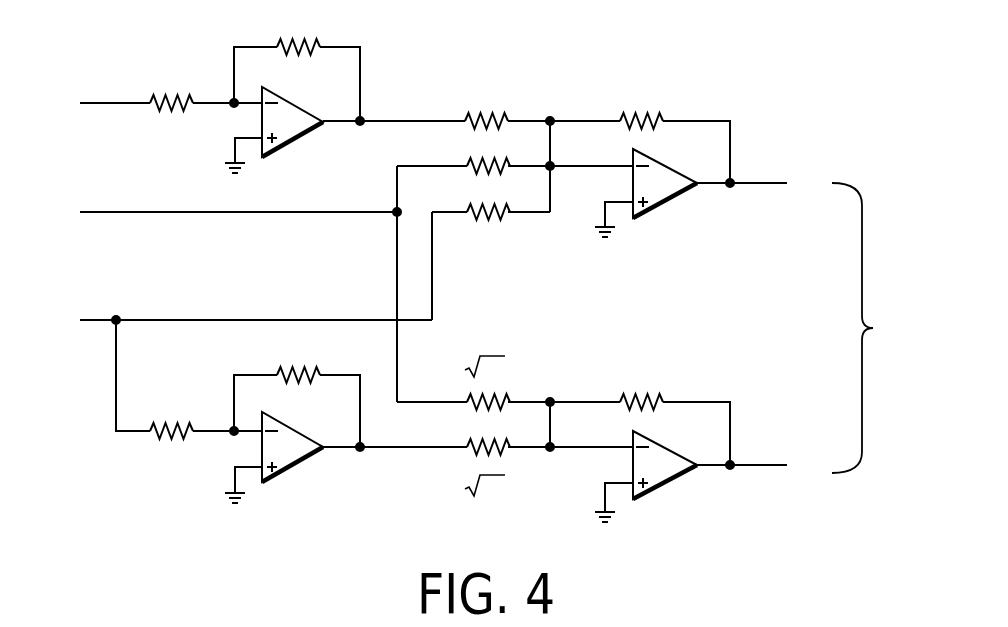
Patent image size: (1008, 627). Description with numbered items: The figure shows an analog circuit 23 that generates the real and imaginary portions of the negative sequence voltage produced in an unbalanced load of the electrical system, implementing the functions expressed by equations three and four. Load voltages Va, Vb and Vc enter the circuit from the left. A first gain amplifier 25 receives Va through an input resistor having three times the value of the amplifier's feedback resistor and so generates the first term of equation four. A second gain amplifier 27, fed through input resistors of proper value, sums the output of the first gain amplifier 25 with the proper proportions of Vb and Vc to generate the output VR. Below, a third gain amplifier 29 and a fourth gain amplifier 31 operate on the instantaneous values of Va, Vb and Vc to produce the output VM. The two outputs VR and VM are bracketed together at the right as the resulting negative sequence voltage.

The analog circuit 23 is at (684, 307).
The first gain amplifier 25 is at (287, 147).
The second gain amplifier 27 is at (667, 203).
The third gain amplifier 29 is at (287, 468).
The fourth gain amplifier 31 is at (670, 482).